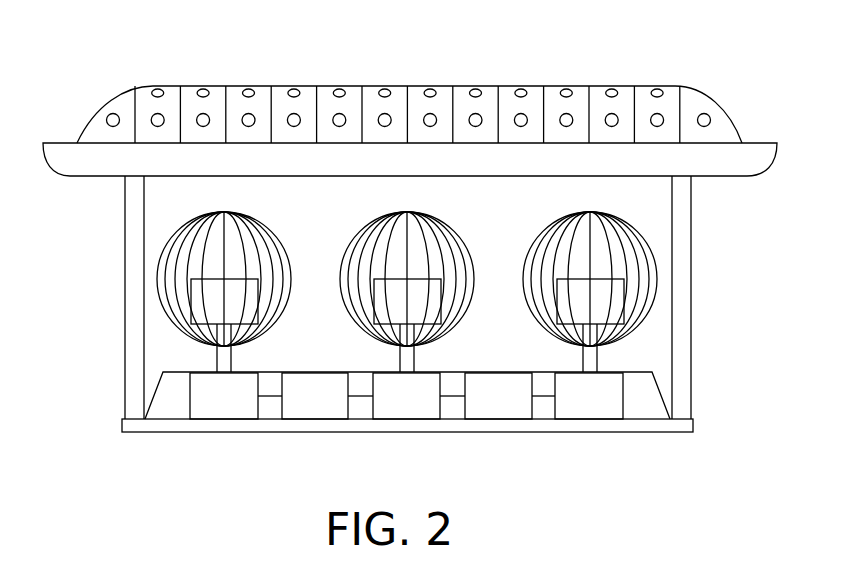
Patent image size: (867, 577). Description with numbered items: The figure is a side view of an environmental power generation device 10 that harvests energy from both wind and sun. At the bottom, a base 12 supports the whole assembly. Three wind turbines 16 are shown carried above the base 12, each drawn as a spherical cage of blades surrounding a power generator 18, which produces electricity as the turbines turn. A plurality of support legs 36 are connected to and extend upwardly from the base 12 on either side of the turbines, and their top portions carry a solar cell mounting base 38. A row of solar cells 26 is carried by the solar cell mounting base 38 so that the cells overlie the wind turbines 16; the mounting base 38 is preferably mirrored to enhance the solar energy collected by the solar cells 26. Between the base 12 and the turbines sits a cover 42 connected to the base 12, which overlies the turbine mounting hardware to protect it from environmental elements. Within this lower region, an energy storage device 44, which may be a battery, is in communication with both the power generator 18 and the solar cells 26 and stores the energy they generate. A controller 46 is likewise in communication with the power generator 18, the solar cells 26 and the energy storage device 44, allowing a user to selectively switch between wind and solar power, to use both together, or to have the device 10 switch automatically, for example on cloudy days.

The environmental power generation device 10 is at (730, 50).
The base 12 is at (684, 433).
The wind turbine 16 is at (638, 252).
The power generator 18 is at (210, 273).
The solar cell 26 is at (416, 95).
The support leg 36 is at (692, 305).
The solar cell mounting base 38 is at (763, 143).
The cover 42 is at (658, 395).
The energy storage device 44 is at (312, 410).
The controller 46 is at (513, 414).